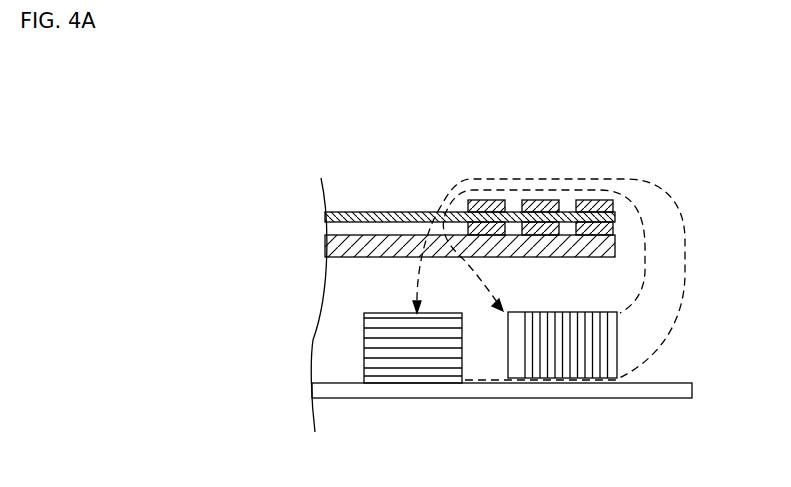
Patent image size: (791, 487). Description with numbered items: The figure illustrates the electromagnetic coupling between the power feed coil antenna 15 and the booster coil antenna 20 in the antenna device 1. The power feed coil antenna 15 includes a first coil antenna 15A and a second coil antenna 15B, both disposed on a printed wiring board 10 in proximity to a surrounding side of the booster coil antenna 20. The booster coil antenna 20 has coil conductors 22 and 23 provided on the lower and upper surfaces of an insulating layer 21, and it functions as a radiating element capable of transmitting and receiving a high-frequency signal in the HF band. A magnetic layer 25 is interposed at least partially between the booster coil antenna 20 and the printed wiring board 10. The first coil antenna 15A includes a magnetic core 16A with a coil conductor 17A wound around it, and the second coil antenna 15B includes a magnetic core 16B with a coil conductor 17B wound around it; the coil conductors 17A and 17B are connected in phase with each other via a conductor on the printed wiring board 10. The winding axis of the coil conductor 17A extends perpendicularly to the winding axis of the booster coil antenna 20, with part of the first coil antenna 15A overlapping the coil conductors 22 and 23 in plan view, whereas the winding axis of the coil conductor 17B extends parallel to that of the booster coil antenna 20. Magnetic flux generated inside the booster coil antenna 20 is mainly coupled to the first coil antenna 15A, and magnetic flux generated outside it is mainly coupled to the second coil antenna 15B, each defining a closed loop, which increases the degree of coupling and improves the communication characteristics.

The antenna device 1 is at (688, 161).
The printed wiring board 10 is at (670, 400).
The power feed coil antenna 15 is at (341, 329).
The first coil antenna 15A is at (617, 354).
The second coil antenna 15B is at (395, 313).
The magnetic core 16A is at (608, 312).
The magnetic core 16B is at (450, 378).
The coil conductor 17A is at (552, 312).
The coil conductor 17B is at (387, 374).
The booster coil antenna 20 is at (463, 178).
The insulating layer 21 is at (384, 212).
The coil conductor 22 is at (617, 226).
The coil conductor 23 is at (540, 200).
The magnetic layer 25 is at (617, 246).